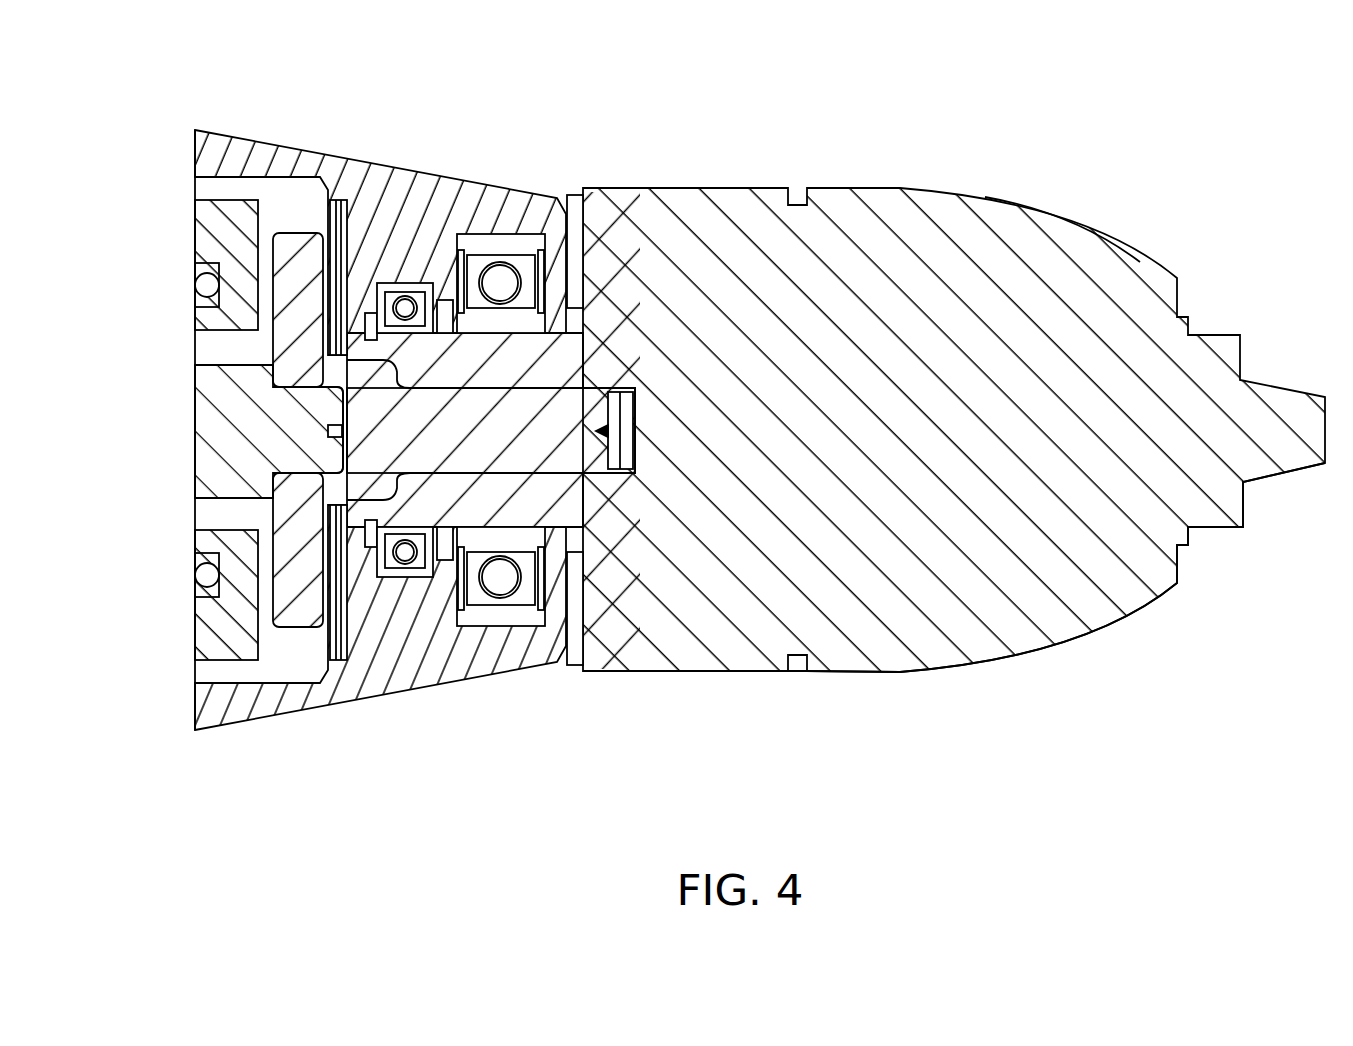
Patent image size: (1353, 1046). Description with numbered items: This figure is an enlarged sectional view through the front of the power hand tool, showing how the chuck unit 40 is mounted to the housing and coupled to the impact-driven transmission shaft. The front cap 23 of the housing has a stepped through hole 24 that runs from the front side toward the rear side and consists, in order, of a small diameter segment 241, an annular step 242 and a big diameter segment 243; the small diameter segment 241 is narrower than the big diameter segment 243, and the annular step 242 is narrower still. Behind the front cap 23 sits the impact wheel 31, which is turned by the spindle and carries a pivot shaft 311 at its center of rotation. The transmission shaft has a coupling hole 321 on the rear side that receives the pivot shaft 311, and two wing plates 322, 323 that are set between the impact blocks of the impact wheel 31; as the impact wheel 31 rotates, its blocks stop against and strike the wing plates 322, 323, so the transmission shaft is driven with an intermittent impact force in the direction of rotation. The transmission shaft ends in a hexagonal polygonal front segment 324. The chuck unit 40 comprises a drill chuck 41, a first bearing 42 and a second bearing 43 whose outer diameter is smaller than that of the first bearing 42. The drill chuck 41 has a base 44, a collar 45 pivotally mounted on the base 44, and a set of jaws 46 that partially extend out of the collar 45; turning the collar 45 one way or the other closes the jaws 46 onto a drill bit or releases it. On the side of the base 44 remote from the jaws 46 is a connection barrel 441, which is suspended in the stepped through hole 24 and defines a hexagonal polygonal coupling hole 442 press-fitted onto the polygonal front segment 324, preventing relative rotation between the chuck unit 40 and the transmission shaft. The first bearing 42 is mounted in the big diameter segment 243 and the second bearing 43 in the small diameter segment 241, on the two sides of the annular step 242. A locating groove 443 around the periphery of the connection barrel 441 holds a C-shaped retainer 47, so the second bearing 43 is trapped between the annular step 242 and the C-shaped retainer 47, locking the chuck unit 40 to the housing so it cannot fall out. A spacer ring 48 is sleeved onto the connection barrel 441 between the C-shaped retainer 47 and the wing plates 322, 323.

The front cap 23 is at (217, 130).
The stepped through hole 24 is at (477, 168).
The small diameter segment 241 is at (402, 283).
The annular step 242 is at (445, 300).
The big diameter segment 243 is at (509, 196).
The impact wheel 31 is at (205, 633).
The pivot shaft 311 is at (207, 385).
The coupling hole 321 is at (340, 390).
The wing plate 322 is at (293, 247).
The wing plate 323 is at (300, 620).
The polygonal front segment 324 is at (584, 452).
The chuck unit 40 is at (884, 186).
The drill chuck 41 is at (954, 668).
The first bearing 42 is at (514, 620).
The second bearing 43 is at (407, 577).
The base 44 is at (752, 662).
The collar 45 is at (940, 663).
The jaws 46 is at (1213, 520).
The C-shaped retainer 47 is at (373, 567).
The spacer ring 48 is at (343, 640).
The connection barrel 441 is at (500, 363).
The polygonal coupling hole 442 is at (590, 390).
The locating groove 443 is at (372, 317).